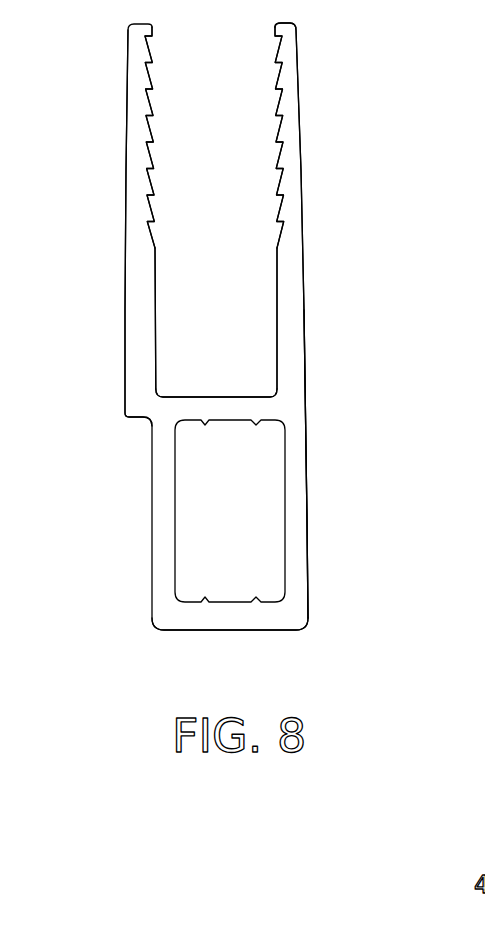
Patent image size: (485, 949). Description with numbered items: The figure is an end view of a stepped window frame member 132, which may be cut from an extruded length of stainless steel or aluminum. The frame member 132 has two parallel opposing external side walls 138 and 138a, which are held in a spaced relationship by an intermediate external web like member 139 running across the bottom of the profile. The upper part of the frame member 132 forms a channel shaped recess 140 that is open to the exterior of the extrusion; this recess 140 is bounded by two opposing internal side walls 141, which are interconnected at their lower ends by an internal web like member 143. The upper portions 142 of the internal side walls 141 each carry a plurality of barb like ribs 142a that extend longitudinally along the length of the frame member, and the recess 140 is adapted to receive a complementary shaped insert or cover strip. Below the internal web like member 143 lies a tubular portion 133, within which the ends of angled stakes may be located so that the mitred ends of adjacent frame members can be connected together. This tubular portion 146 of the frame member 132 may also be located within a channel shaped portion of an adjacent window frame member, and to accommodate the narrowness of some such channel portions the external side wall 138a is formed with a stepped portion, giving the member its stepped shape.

The stepped window frame member 132 is at (342, 75).
The tubular portion 133 is at (257, 486).
The external side wall 138 is at (305, 307).
The external side wall 138a is at (123, 342).
The intermediate external web like member 139 is at (218, 614).
The channel shaped recess 140 is at (240, 268).
The internal side walls 141 is at (278, 197).
The upper portions of the side walls 142 is at (277, 125).
The barb like ribs 142a is at (150, 106).
The internal web like member 143 is at (218, 405).
The tubular portion 146 is at (307, 528).